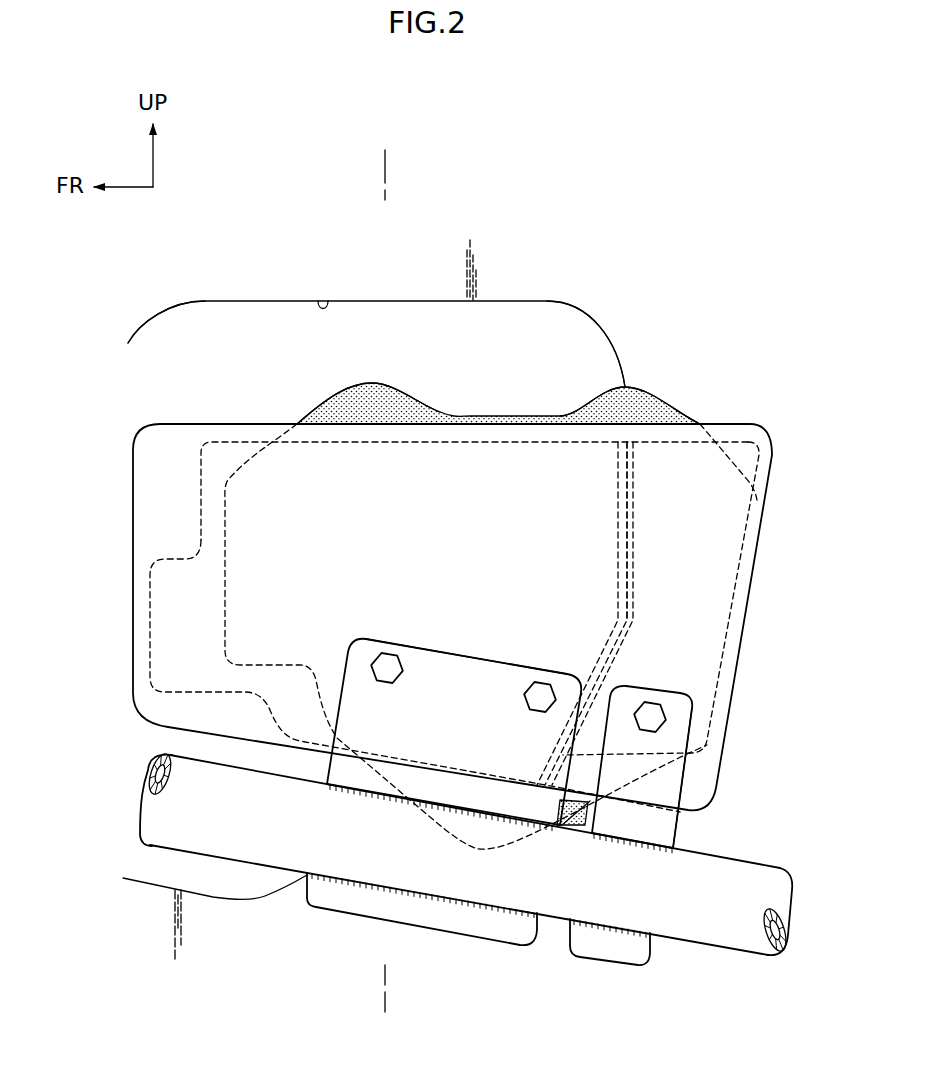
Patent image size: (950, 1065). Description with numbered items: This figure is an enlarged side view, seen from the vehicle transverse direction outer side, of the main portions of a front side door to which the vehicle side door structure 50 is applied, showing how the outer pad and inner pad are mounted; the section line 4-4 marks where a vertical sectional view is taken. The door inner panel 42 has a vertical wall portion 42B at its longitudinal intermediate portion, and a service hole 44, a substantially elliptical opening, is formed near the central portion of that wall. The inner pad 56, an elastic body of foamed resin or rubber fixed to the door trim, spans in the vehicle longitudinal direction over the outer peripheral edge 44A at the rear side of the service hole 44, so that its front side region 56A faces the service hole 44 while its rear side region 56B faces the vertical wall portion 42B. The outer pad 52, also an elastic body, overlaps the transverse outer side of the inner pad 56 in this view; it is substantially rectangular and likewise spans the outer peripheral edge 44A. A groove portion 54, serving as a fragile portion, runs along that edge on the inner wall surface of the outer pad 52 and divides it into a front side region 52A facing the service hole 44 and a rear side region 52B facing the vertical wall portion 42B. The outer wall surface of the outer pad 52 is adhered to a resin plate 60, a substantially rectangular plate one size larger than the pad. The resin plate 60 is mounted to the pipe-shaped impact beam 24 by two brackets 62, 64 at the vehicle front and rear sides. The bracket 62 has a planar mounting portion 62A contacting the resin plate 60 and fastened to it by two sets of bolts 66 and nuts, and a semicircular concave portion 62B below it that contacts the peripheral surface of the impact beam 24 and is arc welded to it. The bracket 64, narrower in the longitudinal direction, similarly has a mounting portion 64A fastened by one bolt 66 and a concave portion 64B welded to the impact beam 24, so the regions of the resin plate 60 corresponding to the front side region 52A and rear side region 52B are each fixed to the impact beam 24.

The section line 4- 4 is at (392, 165).
The impact beam 24 is at (730, 962).
The door inner panel 42 is at (281, 262).
The vertical wall portion 42B is at (166, 322).
The service hole 44 is at (330, 300).
The outer peripheral edge 44A is at (636, 493).
The vehicle side door structure 50 is at (622, 265).
The outer pad 52 is at (222, 438).
The front side region 52A is at (165, 625).
The rear side region 52B is at (716, 578).
The groove portion 54 is at (636, 530).
The inner pad 56 is at (431, 400).
The front side region 56A is at (373, 385).
The rear side region 56B is at (648, 397).
The resin plate 60 is at (133, 518).
The bracket 62 is at (437, 638).
The mounting portion 62A is at (493, 678).
The concave portion 62B is at (512, 938).
The bracket 64 is at (683, 685).
The mounting portion 64A is at (665, 790).
The concave portion 64B is at (610, 957).
The bolt 66 is at (652, 713).